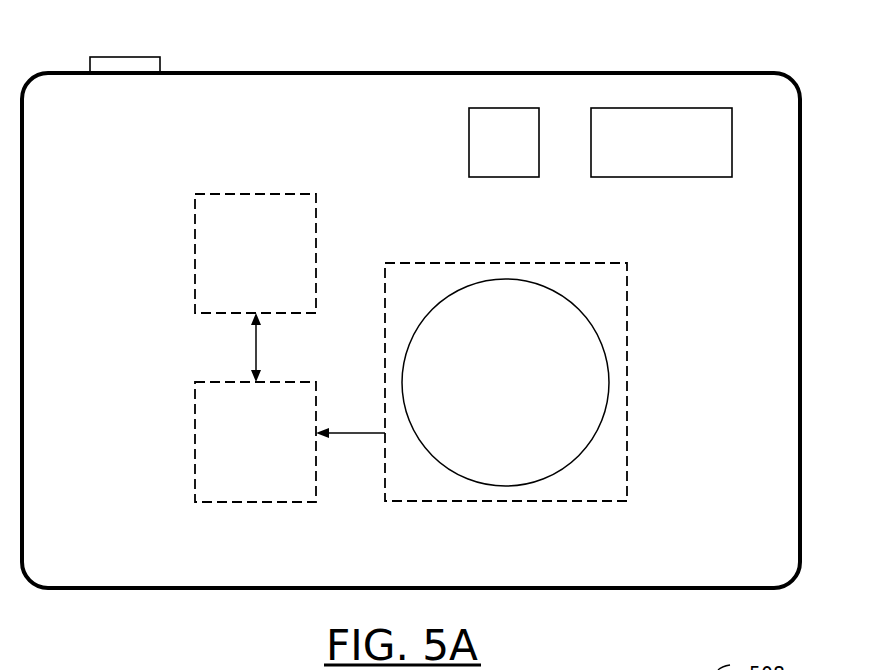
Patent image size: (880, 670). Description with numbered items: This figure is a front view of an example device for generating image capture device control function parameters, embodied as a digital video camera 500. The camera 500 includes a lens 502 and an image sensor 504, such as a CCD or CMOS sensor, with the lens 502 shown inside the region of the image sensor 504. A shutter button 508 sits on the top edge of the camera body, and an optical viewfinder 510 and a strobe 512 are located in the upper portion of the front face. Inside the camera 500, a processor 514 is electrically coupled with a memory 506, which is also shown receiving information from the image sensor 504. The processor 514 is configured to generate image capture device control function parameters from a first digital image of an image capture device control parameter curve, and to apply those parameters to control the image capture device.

The digital video camera 500 is at (411, 330).
The lens 502 is at (505, 382).
The image sensor 504 is at (640, 328).
The memory 506 is at (255, 442).
The shutter button 508 is at (110, 52).
The optical viewfinder 510 is at (504, 142).
The strobe 512 is at (661, 142).
The processor 514 is at (255, 253).